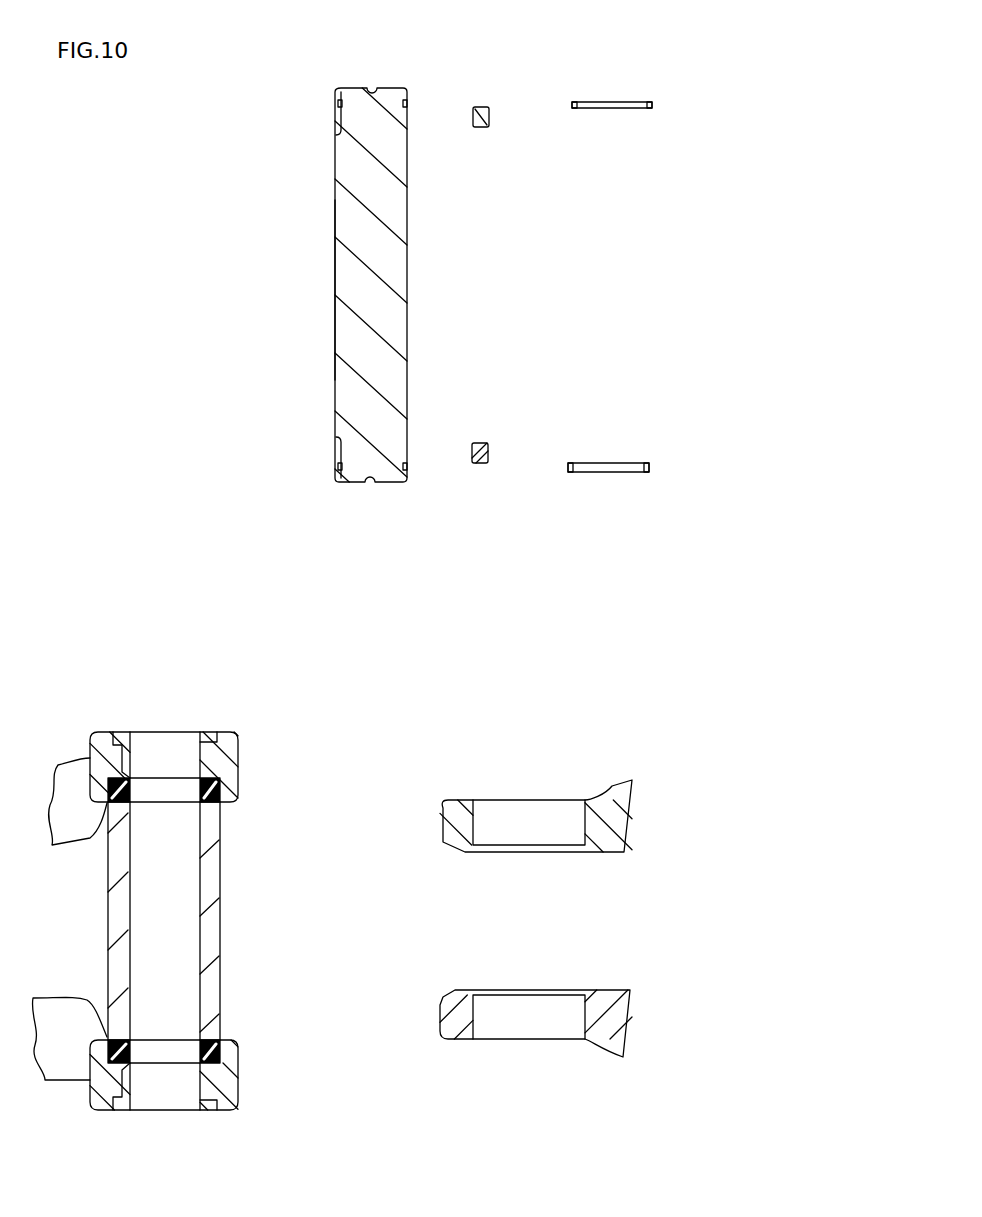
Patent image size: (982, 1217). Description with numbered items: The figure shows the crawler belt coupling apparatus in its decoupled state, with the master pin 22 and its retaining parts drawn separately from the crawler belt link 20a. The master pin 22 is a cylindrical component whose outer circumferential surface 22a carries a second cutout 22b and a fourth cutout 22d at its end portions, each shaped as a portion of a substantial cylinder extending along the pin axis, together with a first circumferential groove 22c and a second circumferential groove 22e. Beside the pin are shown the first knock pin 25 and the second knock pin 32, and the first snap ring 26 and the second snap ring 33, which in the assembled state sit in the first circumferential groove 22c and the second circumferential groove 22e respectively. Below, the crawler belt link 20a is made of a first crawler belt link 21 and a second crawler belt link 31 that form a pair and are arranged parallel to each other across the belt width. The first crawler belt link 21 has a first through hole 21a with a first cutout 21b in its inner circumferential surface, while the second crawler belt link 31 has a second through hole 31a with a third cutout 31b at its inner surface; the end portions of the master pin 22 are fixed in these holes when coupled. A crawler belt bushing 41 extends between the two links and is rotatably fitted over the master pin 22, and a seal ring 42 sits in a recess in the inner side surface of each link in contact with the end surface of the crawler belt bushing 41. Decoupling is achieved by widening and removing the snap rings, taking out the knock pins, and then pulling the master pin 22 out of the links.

The crawler belt link 20a is at (172, 656).
The first crawler belt link 21 is at (361, 1075).
The first through hole 21a is at (200, 1080).
The first cutout 21b is at (126, 1098).
The master pin 22 is at (362, 283).
The outer circumferential surface 22a is at (334, 292).
The second cutout 22b is at (335, 457).
The first circumferential groove 22c is at (409, 465).
The fourth cutout 22d is at (336, 118).
The second circumferential groove 22e is at (406, 103).
The first knock pin 25 is at (479, 464).
The first snap ring 26 is at (644, 473).
The second crawler belt link 31 is at (362, 767).
The second through hole 31a is at (199, 762).
The third cutout 31b is at (127, 740).
The second knock pin 32 is at (483, 106).
The second snap ring 33 is at (646, 101).
The crawler belt bushing 41 is at (215, 897).
The seal ring 42 is at (213, 800).